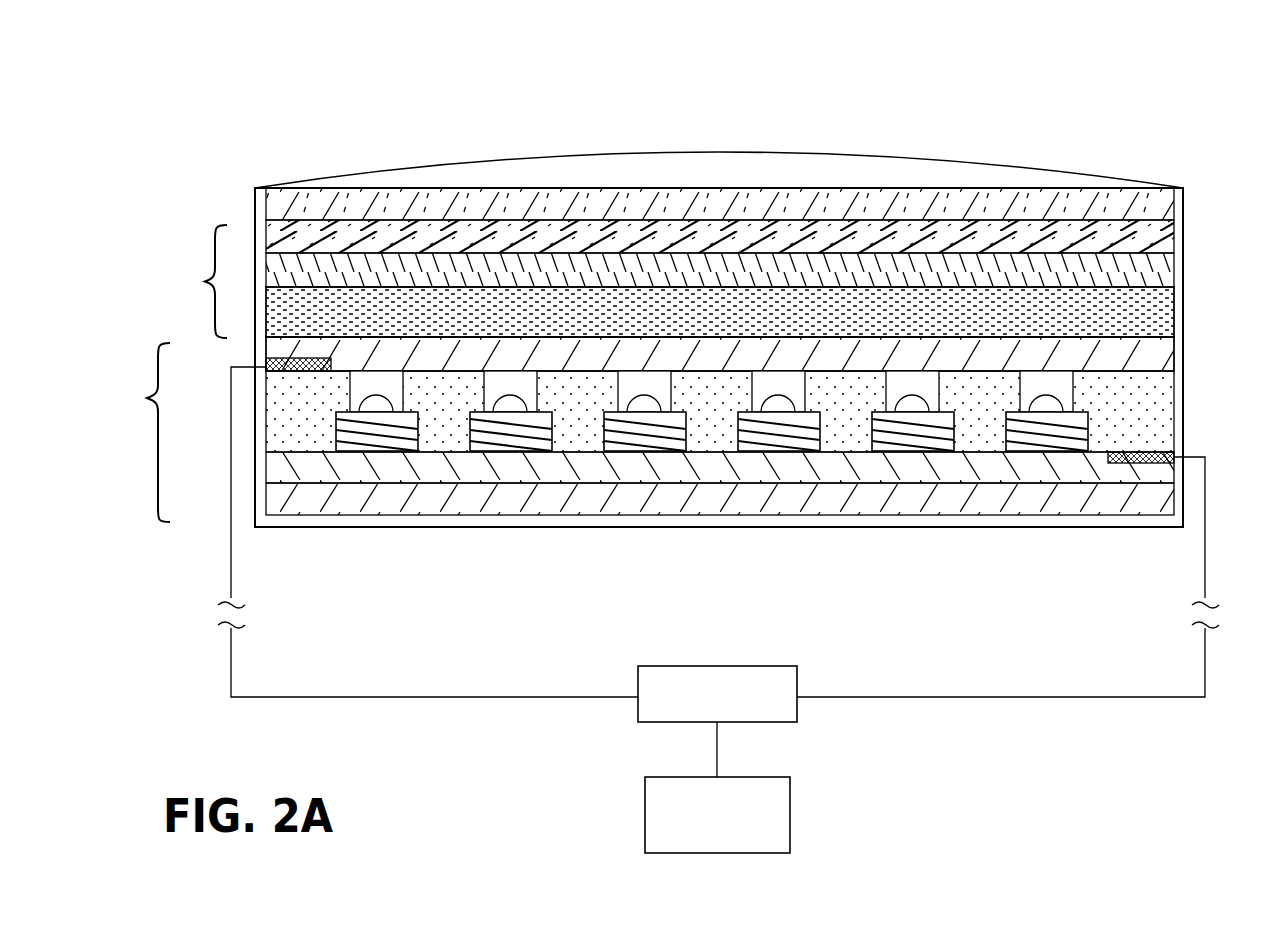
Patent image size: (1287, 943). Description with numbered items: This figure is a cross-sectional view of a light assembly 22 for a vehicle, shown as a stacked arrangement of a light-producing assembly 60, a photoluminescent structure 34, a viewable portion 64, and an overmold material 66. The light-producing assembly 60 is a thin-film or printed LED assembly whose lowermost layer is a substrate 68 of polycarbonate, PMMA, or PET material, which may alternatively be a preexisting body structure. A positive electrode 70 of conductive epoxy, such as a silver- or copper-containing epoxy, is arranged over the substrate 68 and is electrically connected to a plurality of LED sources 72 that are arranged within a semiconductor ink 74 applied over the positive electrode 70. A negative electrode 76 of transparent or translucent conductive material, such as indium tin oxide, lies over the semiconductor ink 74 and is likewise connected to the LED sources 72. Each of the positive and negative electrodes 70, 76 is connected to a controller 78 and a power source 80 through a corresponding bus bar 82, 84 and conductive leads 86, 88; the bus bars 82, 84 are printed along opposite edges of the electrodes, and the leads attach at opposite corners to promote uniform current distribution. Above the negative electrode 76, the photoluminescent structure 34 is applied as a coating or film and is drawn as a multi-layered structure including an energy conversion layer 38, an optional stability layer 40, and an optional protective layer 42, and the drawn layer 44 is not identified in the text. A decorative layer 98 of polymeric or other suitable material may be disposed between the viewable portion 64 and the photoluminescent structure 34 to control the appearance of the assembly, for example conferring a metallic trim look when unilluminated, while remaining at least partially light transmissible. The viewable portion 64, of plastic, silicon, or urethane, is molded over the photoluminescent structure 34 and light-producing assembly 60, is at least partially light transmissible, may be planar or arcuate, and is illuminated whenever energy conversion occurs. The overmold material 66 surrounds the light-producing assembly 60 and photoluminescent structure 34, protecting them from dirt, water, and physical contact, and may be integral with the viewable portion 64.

The light assembly 22 is at (1007, 82).
The viewable portion 64 is at (1047, 168).
The overmold material 66 is at (1178, 190).
The decorative layer 98 is at (1178, 205).
The protective layer 42 is at (1178, 238).
The stability layer 40 is at (1178, 270).
The energy conversion layer 38 is at (1178, 305).
The layer 44 is at (1140, 316).
The negative electrode 76 is at (1174, 358).
The semiconductor ink 74 is at (1178, 404).
The LED sources 72 is at (393, 433).
The positive electrode 70 is at (1178, 475).
The substrate 68 is at (1178, 505).
The bus bar 84 is at (264, 364).
The bus bar 82 is at (1183, 455).
The conductive lead 88 is at (229, 567).
The conductive lead 86 is at (1206, 568).
The controller 78 is at (798, 712).
The power source 80 is at (791, 797).
The photoluminescent structure 34 is at (196, 281).
The light-producing assembly 60 is at (137, 432).